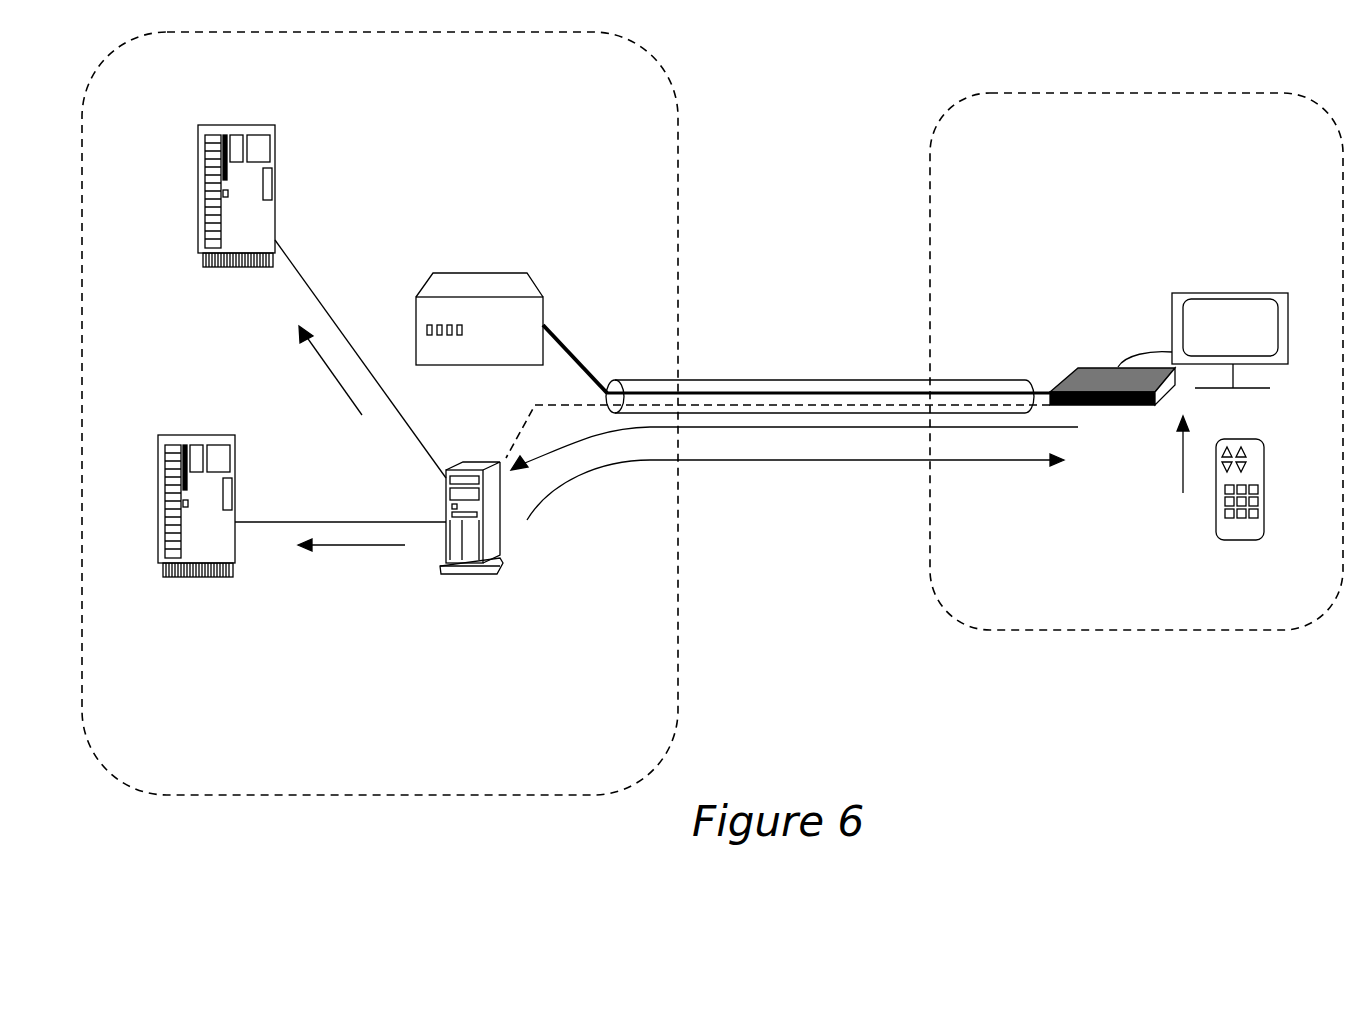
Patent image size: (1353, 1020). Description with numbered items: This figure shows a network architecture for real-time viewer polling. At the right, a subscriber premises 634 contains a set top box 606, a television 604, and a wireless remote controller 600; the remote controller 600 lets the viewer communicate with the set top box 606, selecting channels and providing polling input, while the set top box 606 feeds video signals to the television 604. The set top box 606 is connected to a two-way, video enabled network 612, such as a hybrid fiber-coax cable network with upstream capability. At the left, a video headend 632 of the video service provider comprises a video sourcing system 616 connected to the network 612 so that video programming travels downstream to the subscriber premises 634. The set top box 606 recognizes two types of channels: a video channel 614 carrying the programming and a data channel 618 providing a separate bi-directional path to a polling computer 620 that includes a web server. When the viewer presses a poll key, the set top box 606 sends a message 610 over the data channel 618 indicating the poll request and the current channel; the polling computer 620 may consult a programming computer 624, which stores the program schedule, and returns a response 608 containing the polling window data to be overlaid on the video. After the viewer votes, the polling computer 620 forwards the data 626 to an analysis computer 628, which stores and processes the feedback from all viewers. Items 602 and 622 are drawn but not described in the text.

The wireless remote controller 600 is at (1267, 485).
The remote control signal 602 is at (1183, 465).
The television 604 is at (1292, 323).
The set top box 606 is at (1093, 367).
The response 608 is at (847, 460).
The message 610 is at (742, 427).
The two-way video enabled network 612 is at (805, 380).
The video channel 614 is at (593, 372).
The video sourcing system 616 is at (545, 307).
The data channel 618 is at (524, 420).
The polling computer 620 is at (445, 571).
The data flow to programming computer 622 is at (340, 547).
The programming computer 624 is at (237, 467).
The data 626 is at (327, 373).
The analysis computer 628 is at (282, 198).
The video headend 632 is at (680, 145).
The subscriber premises 634 is at (940, 125).